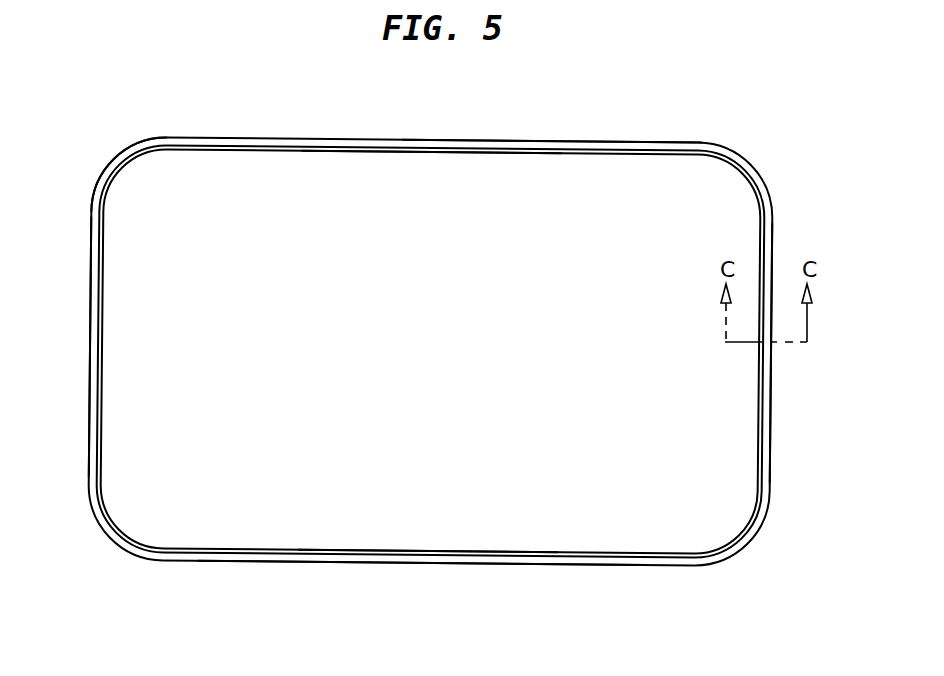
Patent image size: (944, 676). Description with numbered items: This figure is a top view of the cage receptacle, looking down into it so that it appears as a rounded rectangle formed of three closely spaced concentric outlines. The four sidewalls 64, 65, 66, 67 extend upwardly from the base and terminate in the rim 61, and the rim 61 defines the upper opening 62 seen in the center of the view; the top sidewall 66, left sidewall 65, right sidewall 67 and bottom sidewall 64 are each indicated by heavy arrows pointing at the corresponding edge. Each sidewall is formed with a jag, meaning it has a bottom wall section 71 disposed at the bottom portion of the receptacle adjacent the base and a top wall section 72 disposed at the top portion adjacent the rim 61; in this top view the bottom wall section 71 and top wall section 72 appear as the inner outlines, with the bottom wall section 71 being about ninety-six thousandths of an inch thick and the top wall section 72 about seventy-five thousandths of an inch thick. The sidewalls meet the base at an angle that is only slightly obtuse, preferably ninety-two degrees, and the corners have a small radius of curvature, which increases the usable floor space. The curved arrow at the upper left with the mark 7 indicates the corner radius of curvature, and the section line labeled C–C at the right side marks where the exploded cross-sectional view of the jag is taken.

The display assembly 7 is at (207, 203).
The rim 61 is at (569, 149).
The upper opening 62 is at (430, 353).
The sidewall 64 is at (536, 592).
The sidewall 65 is at (63, 372).
The sidewall 66 is at (531, 119).
The sidewall 67 is at (794, 390).
The bottom wall section 71 is at (602, 153).
The top wall section 72 is at (551, 150).